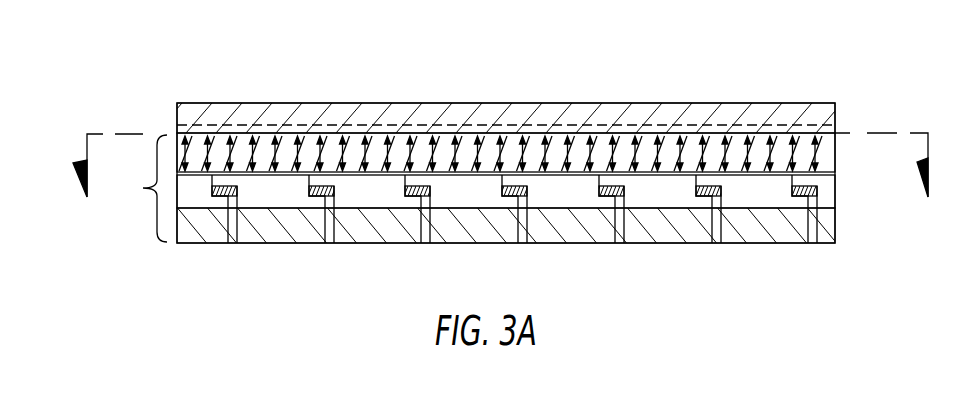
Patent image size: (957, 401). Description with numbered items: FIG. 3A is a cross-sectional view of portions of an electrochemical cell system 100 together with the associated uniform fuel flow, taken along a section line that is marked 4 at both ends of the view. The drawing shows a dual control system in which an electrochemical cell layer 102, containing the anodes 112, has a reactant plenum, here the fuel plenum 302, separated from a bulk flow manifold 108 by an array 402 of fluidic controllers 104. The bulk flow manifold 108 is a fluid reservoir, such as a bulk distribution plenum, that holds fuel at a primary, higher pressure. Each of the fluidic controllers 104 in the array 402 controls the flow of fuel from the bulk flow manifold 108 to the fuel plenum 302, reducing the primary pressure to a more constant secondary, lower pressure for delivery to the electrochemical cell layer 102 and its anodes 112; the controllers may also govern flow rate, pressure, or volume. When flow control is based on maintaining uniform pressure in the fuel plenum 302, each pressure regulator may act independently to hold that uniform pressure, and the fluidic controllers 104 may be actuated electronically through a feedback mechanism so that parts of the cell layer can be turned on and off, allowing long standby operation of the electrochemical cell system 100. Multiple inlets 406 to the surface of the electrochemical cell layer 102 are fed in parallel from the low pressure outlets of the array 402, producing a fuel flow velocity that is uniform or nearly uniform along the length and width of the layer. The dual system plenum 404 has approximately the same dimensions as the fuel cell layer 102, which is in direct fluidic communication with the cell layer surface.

The electrochemical cell system 100 is at (122, 74).
The electrochemical cell layer 102 is at (832, 102).
The fluidic controllers 104 is at (229, 236).
The bulk flow manifold 108 is at (542, 243).
The anodes 112 is at (837, 126).
The fuel plenum 302 is at (835, 157).
The array of fluidic controllers 402 is at (840, 188).
The dual system plenum 404 is at (138, 188).
The inlets 406 is at (205, 170).
The section line 4- 4 is at (508, 189).